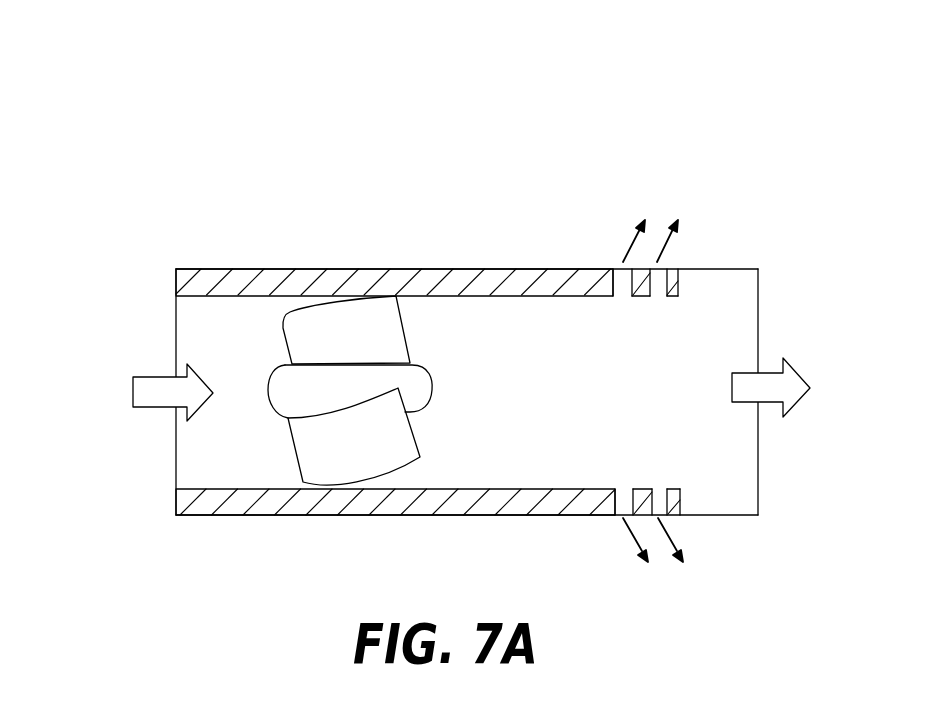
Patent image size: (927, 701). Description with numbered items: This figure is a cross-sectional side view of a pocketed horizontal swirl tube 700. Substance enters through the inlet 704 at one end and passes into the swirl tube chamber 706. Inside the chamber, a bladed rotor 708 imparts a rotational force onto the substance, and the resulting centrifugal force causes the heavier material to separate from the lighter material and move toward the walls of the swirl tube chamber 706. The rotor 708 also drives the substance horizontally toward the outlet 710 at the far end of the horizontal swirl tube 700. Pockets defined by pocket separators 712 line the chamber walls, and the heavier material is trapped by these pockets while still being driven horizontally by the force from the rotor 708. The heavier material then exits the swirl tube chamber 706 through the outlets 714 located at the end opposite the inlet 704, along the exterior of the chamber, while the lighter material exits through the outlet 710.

The pocketed horizontal swirl tube 700 is at (516, 356).
The inlet 704 is at (192, 341).
The swirl tube chamber 706 is at (470, 327).
The bladed rotor 708 is at (358, 310).
The outlet 710 is at (747, 308).
The pocket separators 712 is at (373, 503).
The outlets 714 is at (657, 272).